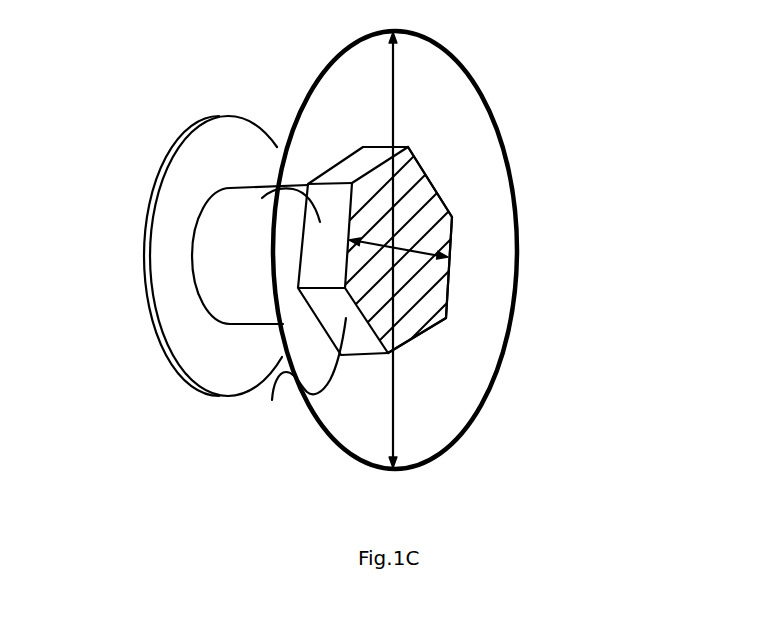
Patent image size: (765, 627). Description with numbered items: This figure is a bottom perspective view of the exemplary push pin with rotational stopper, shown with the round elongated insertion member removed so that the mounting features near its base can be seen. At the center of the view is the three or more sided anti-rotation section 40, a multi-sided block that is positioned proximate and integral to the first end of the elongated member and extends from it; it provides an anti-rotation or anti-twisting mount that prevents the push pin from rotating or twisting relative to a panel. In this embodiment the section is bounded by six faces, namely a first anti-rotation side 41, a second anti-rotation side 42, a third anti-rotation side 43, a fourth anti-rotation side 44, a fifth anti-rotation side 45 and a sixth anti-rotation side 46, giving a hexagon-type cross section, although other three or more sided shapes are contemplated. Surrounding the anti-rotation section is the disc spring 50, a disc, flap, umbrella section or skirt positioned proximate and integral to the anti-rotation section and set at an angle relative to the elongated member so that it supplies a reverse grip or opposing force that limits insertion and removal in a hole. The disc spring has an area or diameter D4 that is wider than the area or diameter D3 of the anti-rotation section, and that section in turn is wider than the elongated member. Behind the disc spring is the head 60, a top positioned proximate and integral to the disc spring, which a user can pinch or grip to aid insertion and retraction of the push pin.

The three or more sided anti-rotation section 40 is at (410, 180).
The first anti-rotation side 41 is at (197, 215).
The second anti-rotation side 42 is at (302, 309).
The third anti-rotation side 43 is at (428, 340).
The fourth anti-rotation side 44 is at (453, 279).
The fifth anti-rotation side 45 is at (442, 192).
The sixth anti-rotation side 46 is at (367, 153).
The disc spring 50 is at (482, 353).
The head 60 is at (136, 337).
The diameter of three or more sided anti-rotation section D3 is at (448, 257).
The diameter of disc spring D4 is at (393, 118).